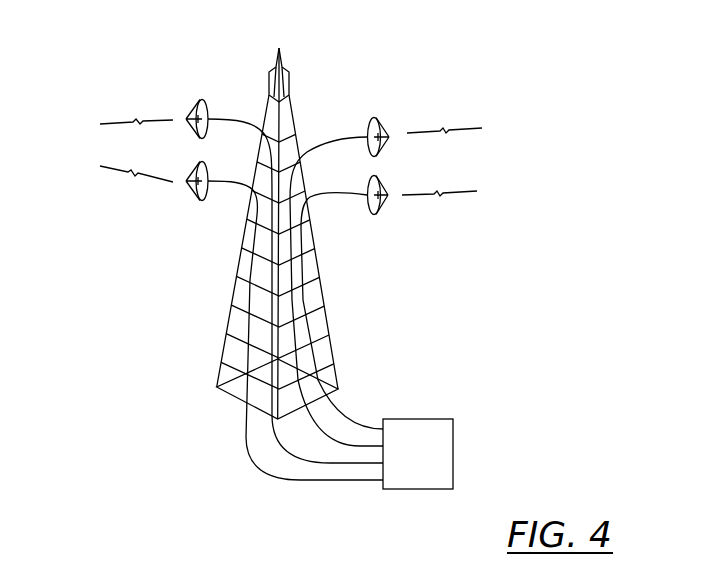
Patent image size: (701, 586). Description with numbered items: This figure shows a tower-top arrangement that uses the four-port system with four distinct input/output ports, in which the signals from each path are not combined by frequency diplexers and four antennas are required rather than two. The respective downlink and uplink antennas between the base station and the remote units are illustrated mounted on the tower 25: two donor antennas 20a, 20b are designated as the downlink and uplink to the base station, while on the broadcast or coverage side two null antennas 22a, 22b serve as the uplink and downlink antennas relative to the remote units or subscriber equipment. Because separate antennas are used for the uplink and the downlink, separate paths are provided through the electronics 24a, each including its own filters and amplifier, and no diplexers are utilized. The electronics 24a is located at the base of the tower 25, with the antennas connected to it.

The tower 25 is at (225, 340).
The null antenna 22b is at (200, 98).
The null antenna 22a is at (200, 200).
The donor antenna 20b is at (375, 117).
The donor antenna 20a is at (377, 214).
The electronics 24a is at (446, 418).